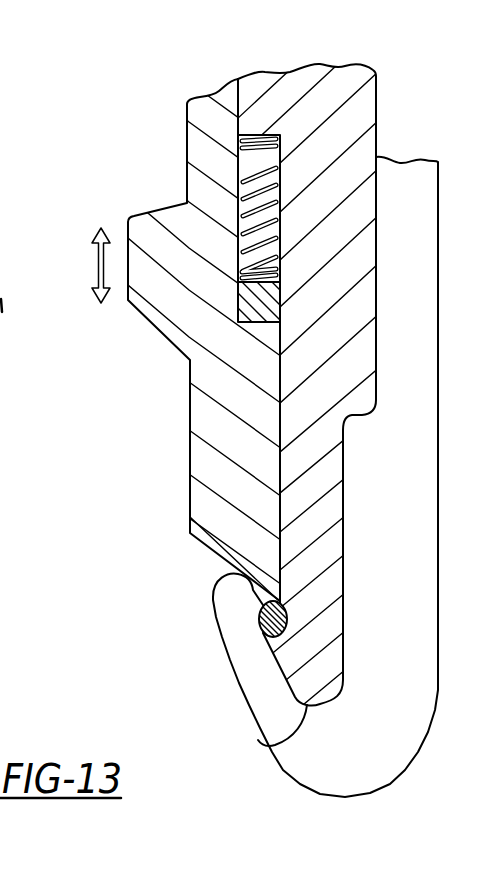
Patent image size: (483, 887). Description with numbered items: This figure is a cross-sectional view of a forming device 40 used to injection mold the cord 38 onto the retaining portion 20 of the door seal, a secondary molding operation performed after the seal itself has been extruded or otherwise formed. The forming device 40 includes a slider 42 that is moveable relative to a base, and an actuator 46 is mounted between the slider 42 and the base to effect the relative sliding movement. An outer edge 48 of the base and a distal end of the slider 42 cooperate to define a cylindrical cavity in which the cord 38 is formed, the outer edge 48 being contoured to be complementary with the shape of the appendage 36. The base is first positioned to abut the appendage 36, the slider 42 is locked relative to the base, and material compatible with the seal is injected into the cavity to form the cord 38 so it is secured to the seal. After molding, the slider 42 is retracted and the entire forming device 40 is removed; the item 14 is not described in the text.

The housing block 14 is at (368, 118).
The retaining portion 20 is at (409, 687).
The appendage 36 is at (257, 697).
The cord 38 is at (256, 621).
The forming device 40 is at (150, 114).
The slider 42 is at (200, 495).
The actuator 46 is at (252, 313).
The outer edge 48 is at (260, 747).